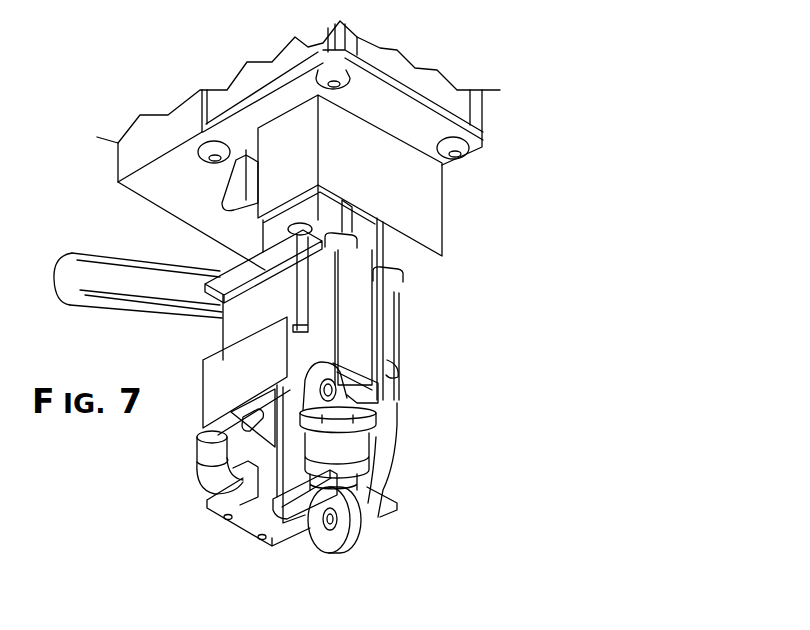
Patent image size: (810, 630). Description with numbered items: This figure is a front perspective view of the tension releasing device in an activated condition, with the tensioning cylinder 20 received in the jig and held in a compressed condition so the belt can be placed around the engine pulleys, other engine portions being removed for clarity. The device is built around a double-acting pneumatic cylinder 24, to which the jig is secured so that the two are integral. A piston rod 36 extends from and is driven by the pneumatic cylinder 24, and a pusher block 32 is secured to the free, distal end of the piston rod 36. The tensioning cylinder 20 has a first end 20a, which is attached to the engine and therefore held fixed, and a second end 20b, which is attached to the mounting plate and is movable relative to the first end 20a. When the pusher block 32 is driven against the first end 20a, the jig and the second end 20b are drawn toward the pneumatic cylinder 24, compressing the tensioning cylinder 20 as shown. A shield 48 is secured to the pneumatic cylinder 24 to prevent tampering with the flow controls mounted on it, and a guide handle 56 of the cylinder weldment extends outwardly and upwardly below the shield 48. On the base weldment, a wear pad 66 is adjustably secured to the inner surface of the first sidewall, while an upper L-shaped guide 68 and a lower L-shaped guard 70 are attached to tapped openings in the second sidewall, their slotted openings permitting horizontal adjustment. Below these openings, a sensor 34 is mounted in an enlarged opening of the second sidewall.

The tensioning cylinder 20 is at (370, 452).
The first end 20a is at (355, 397).
The second end 20b is at (347, 545).
The double-acting pneumatic cylinder 24 is at (435, 85).
The pusher block 32 is at (367, 330).
The sensor 34 is at (230, 539).
The piston rod 36 is at (352, 223).
The shield 48 is at (128, 152).
The guide handle 56 is at (72, 273).
The wear pad 66 is at (357, 402).
The upper L-shaped guide 68 is at (233, 328).
The lower L-shaped guard 70 is at (213, 402).